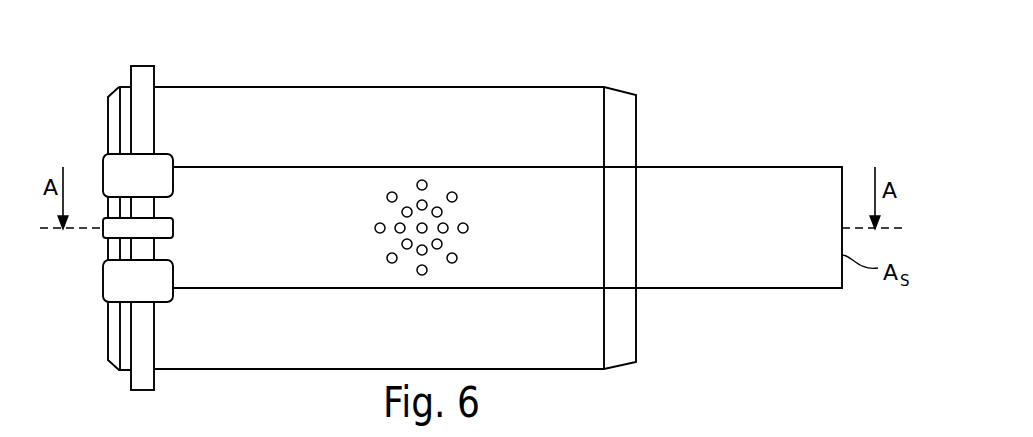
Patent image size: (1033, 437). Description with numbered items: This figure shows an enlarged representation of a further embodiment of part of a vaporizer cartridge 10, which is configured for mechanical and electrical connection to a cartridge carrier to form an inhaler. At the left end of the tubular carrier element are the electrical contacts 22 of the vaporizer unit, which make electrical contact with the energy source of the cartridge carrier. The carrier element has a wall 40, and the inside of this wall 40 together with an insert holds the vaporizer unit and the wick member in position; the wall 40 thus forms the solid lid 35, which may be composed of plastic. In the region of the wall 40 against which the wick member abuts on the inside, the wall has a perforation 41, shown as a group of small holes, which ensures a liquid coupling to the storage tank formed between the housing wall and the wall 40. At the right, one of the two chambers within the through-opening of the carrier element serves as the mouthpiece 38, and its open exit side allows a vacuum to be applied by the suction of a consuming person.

The vaporizer cartridge 10 is at (793, 108).
The electrical contacts 22 is at (109, 171).
The solid lid 35 is at (372, 201).
The mouthpiece 38 is at (705, 166).
The wall 40 is at (250, 197).
The perforation 41 is at (437, 202).